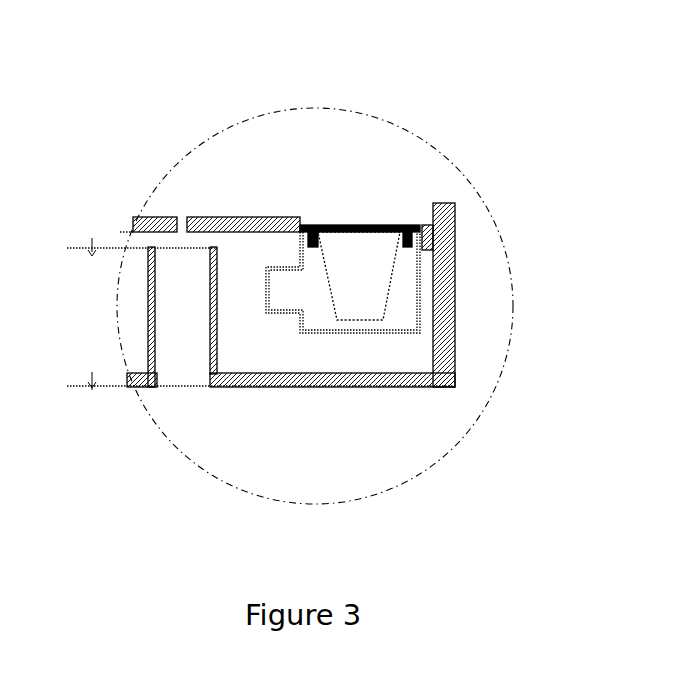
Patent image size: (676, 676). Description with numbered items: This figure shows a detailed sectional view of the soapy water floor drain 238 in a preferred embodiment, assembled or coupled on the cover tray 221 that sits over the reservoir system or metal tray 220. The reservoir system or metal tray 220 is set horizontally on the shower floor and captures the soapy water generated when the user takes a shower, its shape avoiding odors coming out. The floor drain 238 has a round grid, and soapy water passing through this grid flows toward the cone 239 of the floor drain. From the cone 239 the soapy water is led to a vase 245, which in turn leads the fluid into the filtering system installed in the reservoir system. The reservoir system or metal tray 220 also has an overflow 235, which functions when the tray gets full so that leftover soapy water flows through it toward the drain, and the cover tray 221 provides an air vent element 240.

The reservoir system or metal tray 220 is at (265, 390).
The cover tray 221 is at (237, 217).
The air vent element 240 is at (177, 214).
The overflow 235 is at (187, 298).
The floor drain 238 is at (387, 217).
The cone 239 is at (372, 277).
The vase 245 is at (313, 325).